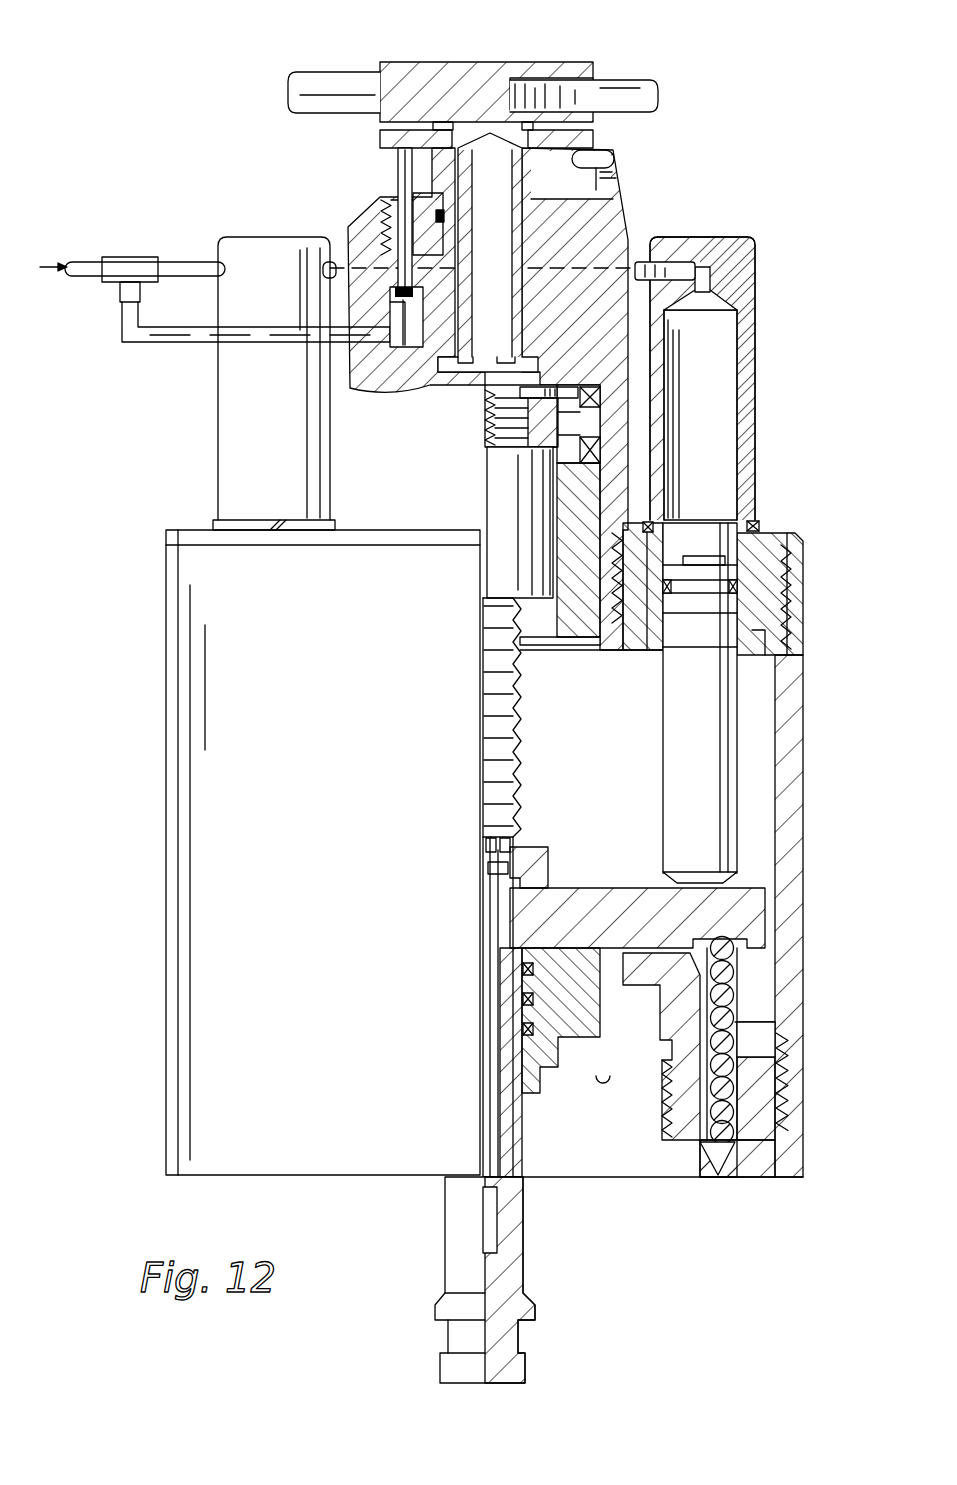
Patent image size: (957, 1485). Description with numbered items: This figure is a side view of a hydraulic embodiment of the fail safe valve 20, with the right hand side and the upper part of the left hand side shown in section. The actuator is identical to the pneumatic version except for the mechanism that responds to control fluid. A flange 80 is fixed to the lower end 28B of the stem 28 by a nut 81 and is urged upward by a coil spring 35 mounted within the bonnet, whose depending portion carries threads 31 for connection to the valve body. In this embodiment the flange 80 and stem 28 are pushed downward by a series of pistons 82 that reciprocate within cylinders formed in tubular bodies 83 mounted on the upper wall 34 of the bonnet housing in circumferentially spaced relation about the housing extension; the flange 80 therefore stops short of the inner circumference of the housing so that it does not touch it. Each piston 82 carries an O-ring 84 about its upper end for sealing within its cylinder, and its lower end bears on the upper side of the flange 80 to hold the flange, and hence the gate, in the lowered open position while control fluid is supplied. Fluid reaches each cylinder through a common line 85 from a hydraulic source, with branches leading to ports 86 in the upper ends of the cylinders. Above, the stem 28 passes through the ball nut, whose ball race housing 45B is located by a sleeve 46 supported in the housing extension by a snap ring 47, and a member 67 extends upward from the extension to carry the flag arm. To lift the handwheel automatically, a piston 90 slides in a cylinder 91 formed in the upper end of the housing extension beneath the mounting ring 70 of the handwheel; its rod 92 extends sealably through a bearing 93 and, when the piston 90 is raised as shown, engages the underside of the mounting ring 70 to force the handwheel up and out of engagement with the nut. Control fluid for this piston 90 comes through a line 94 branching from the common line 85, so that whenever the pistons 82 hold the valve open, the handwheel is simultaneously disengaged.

The valve 20 is at (808, 893).
The stem 28 is at (495, 695).
The lower end of the stem 28B is at (530, 1230).
The threads 31 is at (668, 1142).
The upper wall of the bonnet housing 34 is at (790, 532).
The coil spring 35 is at (740, 965).
The ball race housing 45B is at (510, 500).
The sleeve 46 is at (556, 398).
The snap ring 47 is at (480, 372).
The member 67 is at (608, 192).
The mounting ring 70 is at (590, 66).
The flange 80 is at (595, 888).
The nut 81 is at (540, 846).
The pistons 82 is at (740, 725).
The tubular bodies 83 is at (756, 362).
The O-ring 84 is at (740, 582).
The common line 85 is at (192, 258).
The ports 86 is at (680, 262).
The piston 90 is at (392, 290).
The cylinder 91 is at (392, 315).
The rod 92 is at (398, 166).
The bearing 93 is at (386, 217).
The line 94 is at (190, 345).